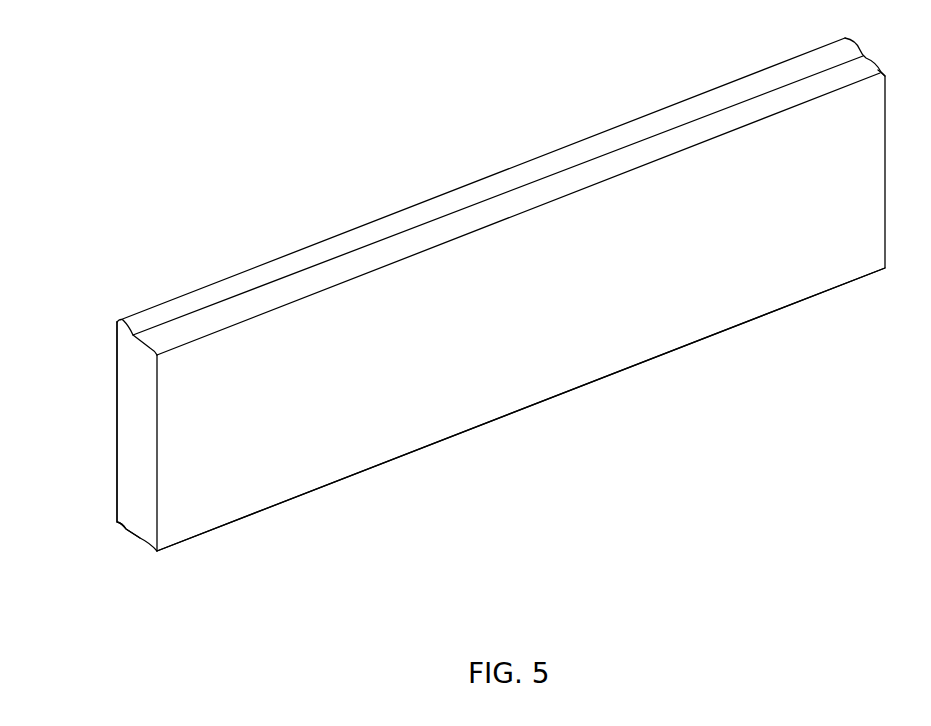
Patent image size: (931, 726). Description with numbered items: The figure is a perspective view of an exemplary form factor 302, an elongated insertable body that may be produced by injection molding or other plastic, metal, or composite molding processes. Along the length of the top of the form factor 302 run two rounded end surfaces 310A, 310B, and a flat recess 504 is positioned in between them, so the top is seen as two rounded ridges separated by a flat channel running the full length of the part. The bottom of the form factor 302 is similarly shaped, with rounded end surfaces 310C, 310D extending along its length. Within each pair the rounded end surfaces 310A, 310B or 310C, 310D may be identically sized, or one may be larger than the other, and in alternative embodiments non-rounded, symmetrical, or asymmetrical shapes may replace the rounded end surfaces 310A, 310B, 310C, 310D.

The form factor 302 is at (460, 363).
The flat recess 504 is at (338, 263).
The rounded end surface 310A is at (163, 316).
The rounded end surface 310B is at (262, 307).
The rounded end surface 310C is at (152, 553).
The rounded end surface 310D is at (119, 529).